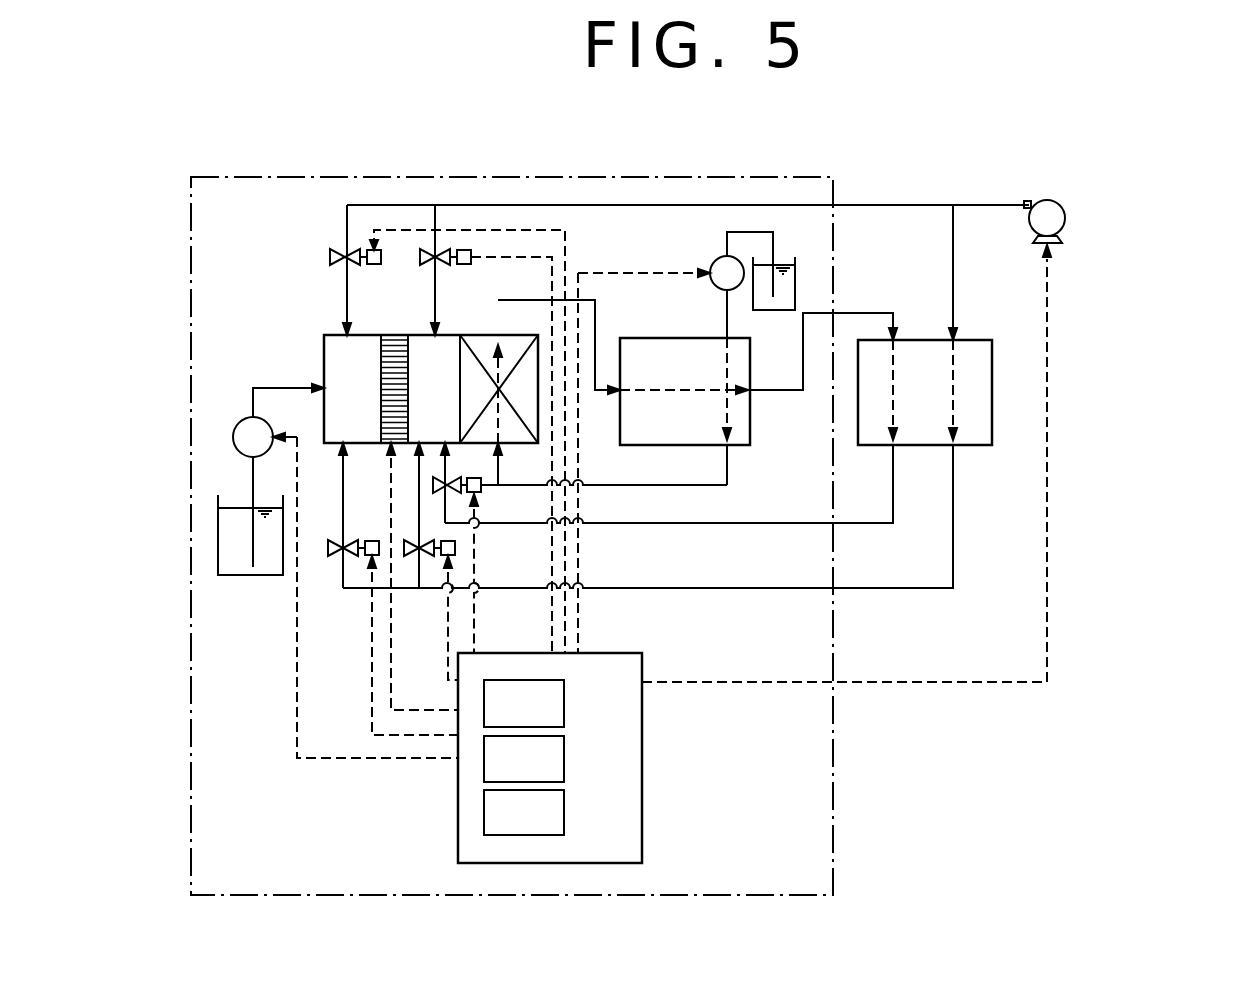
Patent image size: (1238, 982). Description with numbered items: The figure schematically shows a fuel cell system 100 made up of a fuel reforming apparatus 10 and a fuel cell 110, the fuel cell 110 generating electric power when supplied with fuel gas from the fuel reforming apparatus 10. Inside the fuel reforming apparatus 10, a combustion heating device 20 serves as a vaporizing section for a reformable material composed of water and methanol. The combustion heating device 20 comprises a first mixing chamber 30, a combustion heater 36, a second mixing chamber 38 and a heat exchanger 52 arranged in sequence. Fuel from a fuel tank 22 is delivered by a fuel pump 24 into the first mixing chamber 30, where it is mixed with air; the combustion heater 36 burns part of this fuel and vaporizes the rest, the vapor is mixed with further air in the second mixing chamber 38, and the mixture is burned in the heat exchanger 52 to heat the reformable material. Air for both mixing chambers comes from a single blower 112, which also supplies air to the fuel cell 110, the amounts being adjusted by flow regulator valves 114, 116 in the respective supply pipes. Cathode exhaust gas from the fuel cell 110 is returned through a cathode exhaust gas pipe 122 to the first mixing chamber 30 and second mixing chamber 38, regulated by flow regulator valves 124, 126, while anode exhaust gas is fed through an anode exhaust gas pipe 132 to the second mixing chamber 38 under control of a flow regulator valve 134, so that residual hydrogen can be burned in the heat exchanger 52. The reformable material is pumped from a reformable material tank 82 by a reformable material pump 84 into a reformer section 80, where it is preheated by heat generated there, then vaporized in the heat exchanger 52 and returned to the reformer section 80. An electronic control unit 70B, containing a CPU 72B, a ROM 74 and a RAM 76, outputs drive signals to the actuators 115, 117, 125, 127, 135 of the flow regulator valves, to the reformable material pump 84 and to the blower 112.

The fuel reforming apparatus 10 is at (283, 172).
The fuel cell system 100 is at (1084, 183).
The combustion heating device 20 is at (276, 316).
The fuel tank 22 is at (240, 578).
The fuel pump 24 is at (240, 423).
The first mixing chamber 30 is at (324, 356).
The combustion heater 36 is at (395, 335).
The second mixing chamber 38 is at (450, 335).
The heat exchanger 52 is at (487, 335).
The reformer section 80 is at (660, 338).
The reformable material tank 82 is at (797, 280).
The reformable material pump 84 is at (712, 262).
The fuel cell 110 is at (975, 340).
The blower 112 is at (1065, 220).
The flow regulator valve 114 is at (336, 252).
The actuator 115 is at (368, 262).
The flow regulator valve 116 is at (425, 258).
The actuator 117 is at (475, 258).
The cathode exhaust gas pipe 122 is at (956, 500).
The flow regulator valve 124 is at (330, 553).
The actuator 125 is at (372, 560).
The flow regulator valve 126 is at (408, 553).
The actuator 127 is at (455, 550).
The anode exhaust gas pipe 132 is at (893, 457).
The flow regulator valve 134 is at (558, 477).
The actuator 135 is at (481, 492).
The electronic control unit 70B is at (602, 758).
The CPU 72B is at (564, 700).
The ROM 74 is at (564, 765).
The RAM 76 is at (564, 822).